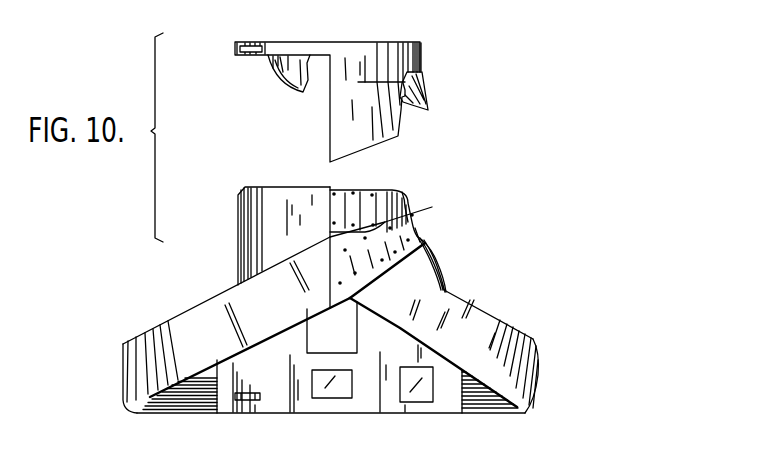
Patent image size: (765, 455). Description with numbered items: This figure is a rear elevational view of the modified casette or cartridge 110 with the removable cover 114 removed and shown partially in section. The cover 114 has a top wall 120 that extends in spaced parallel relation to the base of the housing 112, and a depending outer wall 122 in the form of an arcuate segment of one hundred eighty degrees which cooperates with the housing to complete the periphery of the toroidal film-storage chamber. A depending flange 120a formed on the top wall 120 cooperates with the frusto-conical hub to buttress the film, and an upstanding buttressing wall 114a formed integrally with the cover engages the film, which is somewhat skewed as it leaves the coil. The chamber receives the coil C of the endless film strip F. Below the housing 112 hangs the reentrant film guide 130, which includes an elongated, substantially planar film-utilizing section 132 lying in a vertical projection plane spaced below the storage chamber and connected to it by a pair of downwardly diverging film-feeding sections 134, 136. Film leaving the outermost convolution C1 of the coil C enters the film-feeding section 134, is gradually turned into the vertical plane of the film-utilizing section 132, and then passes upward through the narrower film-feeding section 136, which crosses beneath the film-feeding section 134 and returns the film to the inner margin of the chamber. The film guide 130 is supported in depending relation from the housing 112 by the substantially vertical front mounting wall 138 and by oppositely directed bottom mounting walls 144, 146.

The casette or cartridge 110 is at (527, 207).
The housing 112 is at (237, 233).
The removable cover 114 is at (357, 55).
The buttressing wall 114a is at (429, 104).
The top wall 120 is at (255, 44).
The depending flange 120a is at (290, 72).
The depending outer wall 122 is at (424, 60).
The reentrant film guide 130 is at (520, 330).
The film-utilizing section 132 is at (278, 405).
The film-feeding section 134 is at (197, 312).
The film-feeding section 136 is at (477, 312).
The front mounting wall 138 is at (382, 338).
The bottom mounting wall 144 is at (173, 402).
The bottom mounting wall 146 is at (490, 405).
The coil C is at (360, 196).
The outermost convolution C1 is at (417, 228).
The film strip F is at (335, 277).